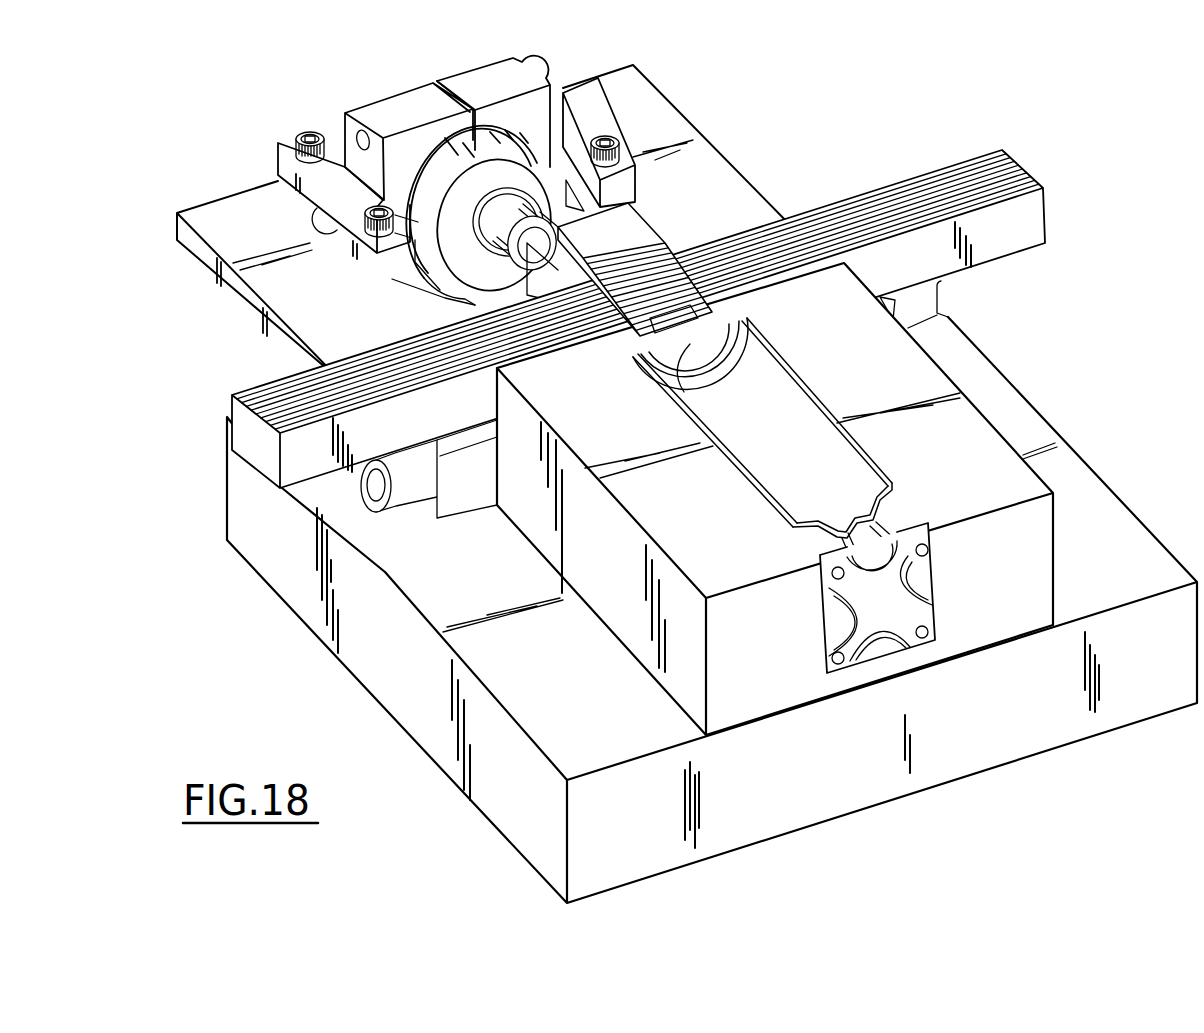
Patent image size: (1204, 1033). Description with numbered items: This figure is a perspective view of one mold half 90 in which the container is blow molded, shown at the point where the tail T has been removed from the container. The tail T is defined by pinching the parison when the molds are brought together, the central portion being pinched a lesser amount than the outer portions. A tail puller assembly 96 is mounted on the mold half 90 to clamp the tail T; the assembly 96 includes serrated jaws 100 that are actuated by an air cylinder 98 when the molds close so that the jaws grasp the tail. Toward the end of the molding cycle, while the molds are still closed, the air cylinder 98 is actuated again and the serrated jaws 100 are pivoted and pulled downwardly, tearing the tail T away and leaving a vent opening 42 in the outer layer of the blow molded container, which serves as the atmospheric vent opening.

The vent opening 42 is at (675, 395).
The mold half 90 is at (552, 527).
The tail puller assembly 96 is at (658, 108).
The air cylinder 98 is at (538, 168).
The serrated jaws 100 is at (897, 182).
The tail T is at (642, 220).